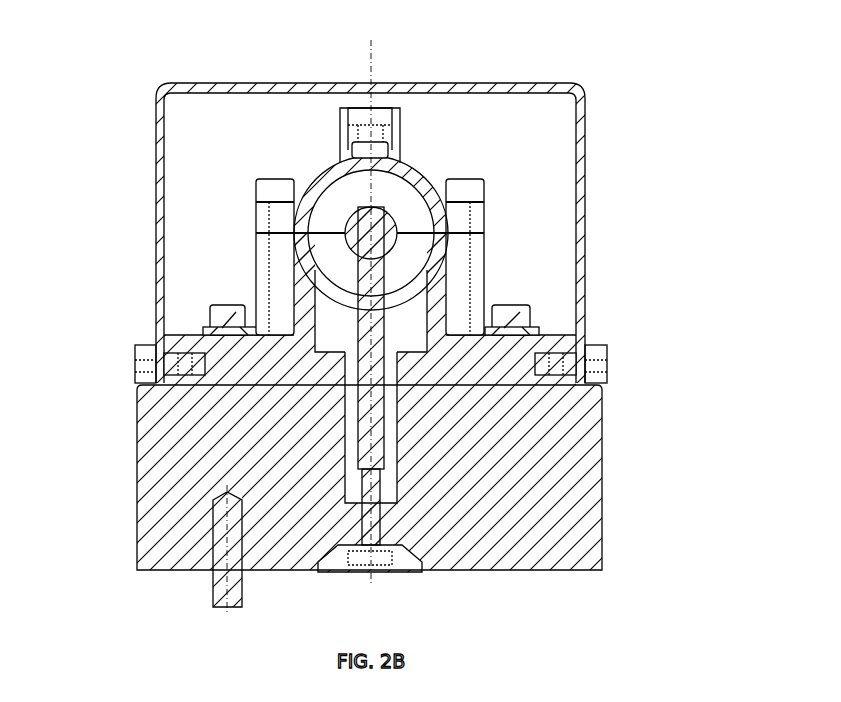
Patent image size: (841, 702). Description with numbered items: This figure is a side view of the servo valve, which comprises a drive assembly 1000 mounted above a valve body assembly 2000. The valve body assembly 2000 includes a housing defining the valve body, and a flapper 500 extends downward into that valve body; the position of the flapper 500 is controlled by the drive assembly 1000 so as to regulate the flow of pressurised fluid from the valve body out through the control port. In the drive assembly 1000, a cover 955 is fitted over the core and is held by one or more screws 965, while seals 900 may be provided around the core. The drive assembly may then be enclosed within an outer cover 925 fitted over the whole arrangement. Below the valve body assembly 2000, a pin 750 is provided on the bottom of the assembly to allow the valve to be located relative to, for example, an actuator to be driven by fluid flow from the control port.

The drive assembly 1000 is at (429, 313).
The cover 925 is at (497, 127).
The screw 965 is at (362, 118).
The cover 955 is at (407, 173).
The seal 900 is at (597, 348).
The flapper 500 is at (373, 398).
The valve body assembly 2000 is at (604, 510).
The pin 750 is at (213, 570).